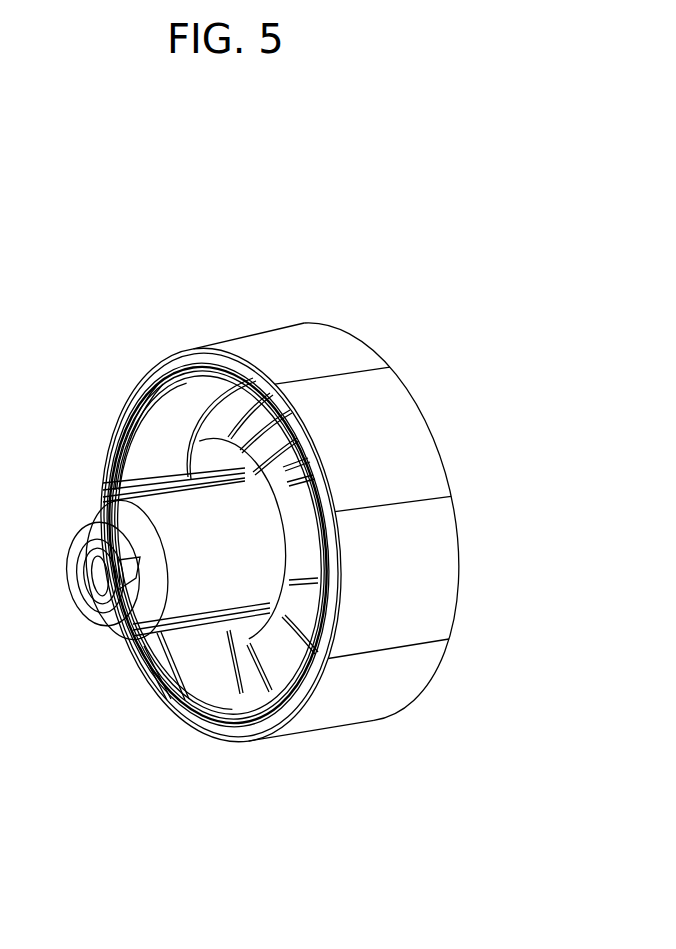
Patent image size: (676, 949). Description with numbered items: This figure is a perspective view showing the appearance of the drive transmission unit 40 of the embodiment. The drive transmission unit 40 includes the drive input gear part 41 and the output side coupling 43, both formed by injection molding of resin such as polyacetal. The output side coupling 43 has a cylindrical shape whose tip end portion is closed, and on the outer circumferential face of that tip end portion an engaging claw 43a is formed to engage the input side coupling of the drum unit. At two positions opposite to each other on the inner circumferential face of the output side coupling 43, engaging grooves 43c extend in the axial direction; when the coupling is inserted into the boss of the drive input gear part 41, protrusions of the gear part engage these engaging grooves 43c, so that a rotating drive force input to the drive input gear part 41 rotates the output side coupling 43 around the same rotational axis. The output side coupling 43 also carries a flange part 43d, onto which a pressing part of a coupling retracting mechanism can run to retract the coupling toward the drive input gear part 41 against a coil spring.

The drive transmission unit 40 is at (490, 380).
The drive input gear part 41 is at (442, 592).
The output side coupling 43 is at (240, 625).
The engaging claw 43a is at (112, 633).
The engaging groove 43c is at (152, 480).
The flange part 43d is at (237, 467).